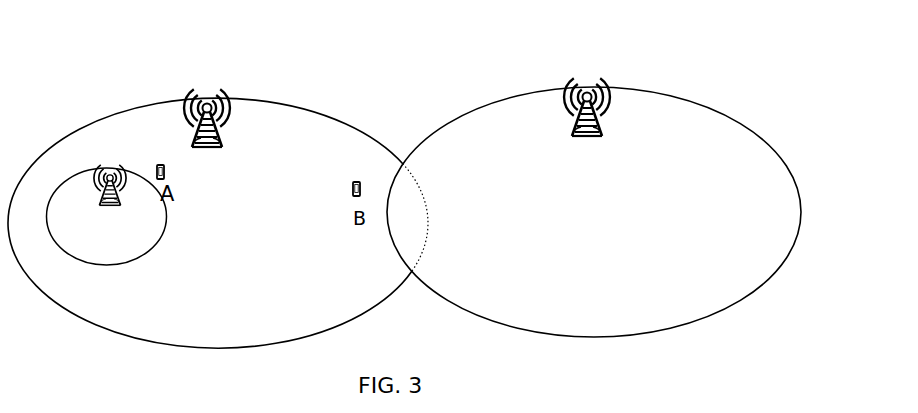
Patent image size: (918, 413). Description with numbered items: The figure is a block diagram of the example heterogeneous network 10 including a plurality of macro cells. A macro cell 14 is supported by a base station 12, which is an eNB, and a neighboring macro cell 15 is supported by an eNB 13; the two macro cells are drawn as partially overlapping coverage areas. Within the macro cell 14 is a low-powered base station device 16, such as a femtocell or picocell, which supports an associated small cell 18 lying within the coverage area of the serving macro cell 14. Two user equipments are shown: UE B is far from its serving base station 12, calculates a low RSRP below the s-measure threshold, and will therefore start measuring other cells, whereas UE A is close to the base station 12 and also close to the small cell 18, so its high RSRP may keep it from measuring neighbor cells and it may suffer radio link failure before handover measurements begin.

The heterogeneous network 10 is at (271, 54).
The base station 12 is at (222, 147).
The eNB 13 is at (600, 138).
The macro cell 14 is at (117, 114).
The neighboring macro cell 15 is at (492, 107).
The low-powered base station device 16 is at (103, 193).
The small cell 18 is at (148, 252).